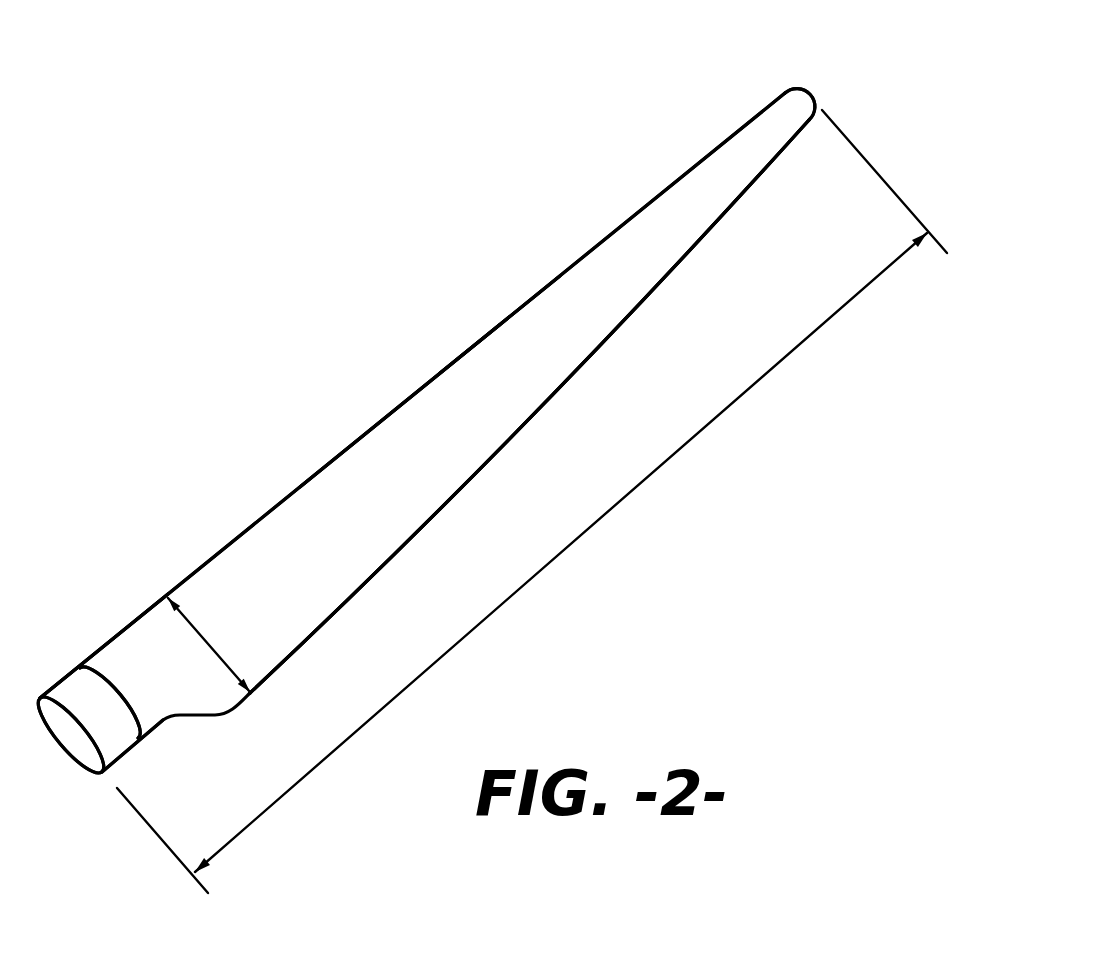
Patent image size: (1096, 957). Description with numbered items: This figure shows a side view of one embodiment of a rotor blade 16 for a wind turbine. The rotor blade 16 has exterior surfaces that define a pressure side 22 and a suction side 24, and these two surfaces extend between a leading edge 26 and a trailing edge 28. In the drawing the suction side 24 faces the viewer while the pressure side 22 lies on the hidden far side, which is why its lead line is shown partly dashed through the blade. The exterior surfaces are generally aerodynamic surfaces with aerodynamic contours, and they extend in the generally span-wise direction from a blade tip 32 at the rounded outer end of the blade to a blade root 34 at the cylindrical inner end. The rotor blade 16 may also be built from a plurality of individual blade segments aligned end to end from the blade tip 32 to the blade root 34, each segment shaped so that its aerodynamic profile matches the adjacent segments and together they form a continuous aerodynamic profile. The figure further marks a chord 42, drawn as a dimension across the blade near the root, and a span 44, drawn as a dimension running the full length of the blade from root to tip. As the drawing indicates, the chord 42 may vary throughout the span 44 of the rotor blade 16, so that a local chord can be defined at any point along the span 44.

The rotor blade 16 is at (695, 510).
The pressure side 22 is at (353, 475).
The suction side 24 is at (523, 357).
The leading edge 26 is at (392, 412).
The trailing edge 28 is at (477, 473).
The blade tip 32 is at (811, 88).
The blade root 34 is at (66, 753).
The chord 42 is at (200, 638).
The span 44 is at (527, 582).